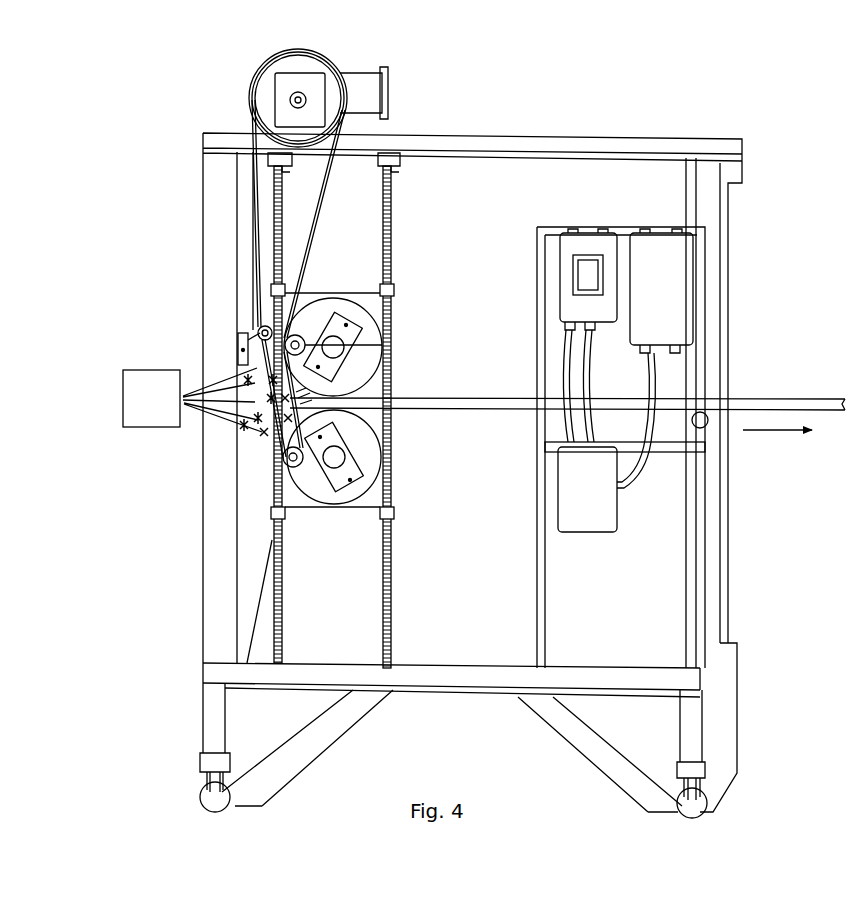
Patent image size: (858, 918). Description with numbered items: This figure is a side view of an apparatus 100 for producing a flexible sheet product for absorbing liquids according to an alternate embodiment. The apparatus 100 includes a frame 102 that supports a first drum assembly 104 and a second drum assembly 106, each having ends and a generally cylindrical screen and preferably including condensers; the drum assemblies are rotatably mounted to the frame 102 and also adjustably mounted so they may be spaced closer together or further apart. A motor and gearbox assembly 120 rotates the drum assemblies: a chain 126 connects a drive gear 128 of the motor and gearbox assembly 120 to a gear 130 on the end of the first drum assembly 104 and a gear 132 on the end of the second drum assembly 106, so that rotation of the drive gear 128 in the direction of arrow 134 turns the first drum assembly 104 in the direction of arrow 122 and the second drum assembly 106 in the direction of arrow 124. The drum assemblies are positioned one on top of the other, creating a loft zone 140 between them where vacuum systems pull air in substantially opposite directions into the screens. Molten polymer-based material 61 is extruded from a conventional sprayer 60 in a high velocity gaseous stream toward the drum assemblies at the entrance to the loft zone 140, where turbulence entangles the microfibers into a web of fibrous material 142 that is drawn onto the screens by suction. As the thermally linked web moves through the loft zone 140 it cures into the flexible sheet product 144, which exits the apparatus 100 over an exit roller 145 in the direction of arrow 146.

The apparatus 100 is at (628, 118).
The frame 102 is at (213, 673).
The first drum assembly 104 is at (360, 315).
The second drum assembly 106 is at (372, 489).
The motor and gearbox assembly 120 is at (392, 98).
The arrow 122 is at (308, 280).
The arrow 124 is at (337, 527).
The chain 126 is at (330, 180).
The drive gear 128 is at (262, 98).
The gear 130 is at (381, 352).
The gear 132 is at (357, 520).
The arrow 134 is at (335, 48).
The loft zone 140 is at (318, 408).
The web of fibrous material 142 is at (262, 440).
The flexible sheet product 144 is at (455, 398).
The exit roller 145 is at (690, 432).
The arrow 146 is at (760, 437).
The sprayer 60 is at (192, 400).
The molten polymer-based material 61 is at (218, 380).